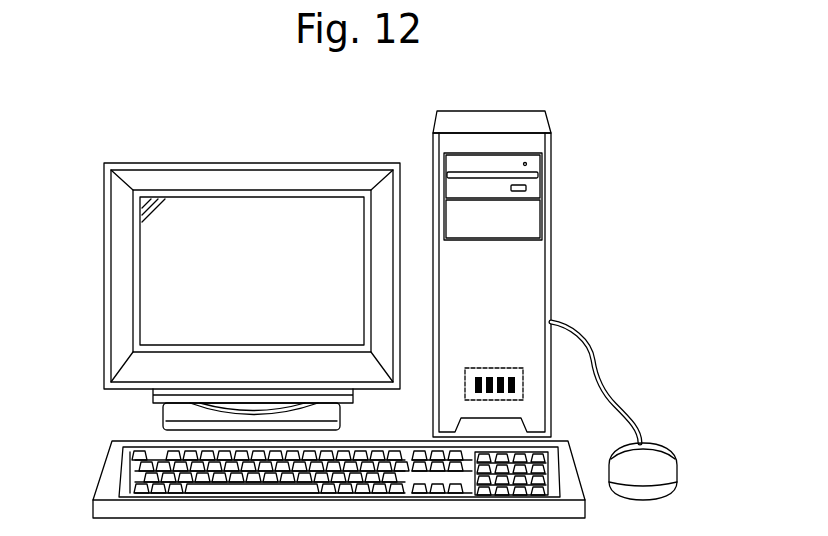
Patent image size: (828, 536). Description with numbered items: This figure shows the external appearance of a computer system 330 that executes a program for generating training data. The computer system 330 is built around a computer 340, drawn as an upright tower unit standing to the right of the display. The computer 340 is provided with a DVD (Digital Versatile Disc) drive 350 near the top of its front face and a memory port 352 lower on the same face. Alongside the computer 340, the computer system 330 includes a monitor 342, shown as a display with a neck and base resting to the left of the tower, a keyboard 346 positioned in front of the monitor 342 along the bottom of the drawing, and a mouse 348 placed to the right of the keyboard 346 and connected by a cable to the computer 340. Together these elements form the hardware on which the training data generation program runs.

The computer system 330 is at (610, 76).
The computer 340 is at (525, 243).
The monitor 342 is at (380, 163).
The keyboard 346 is at (577, 460).
The mouse 348 is at (675, 450).
The DVD drive 350 is at (553, 173).
The memory port 352 is at (526, 390).